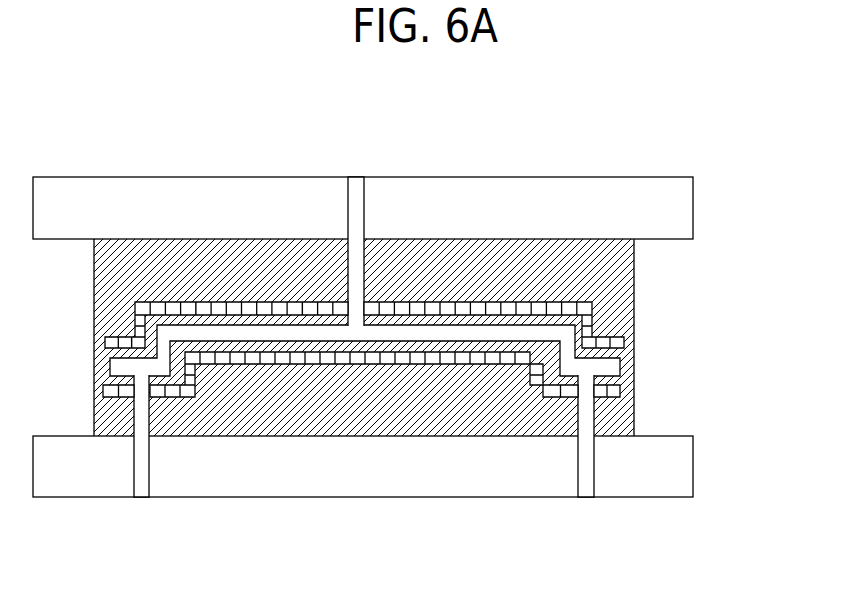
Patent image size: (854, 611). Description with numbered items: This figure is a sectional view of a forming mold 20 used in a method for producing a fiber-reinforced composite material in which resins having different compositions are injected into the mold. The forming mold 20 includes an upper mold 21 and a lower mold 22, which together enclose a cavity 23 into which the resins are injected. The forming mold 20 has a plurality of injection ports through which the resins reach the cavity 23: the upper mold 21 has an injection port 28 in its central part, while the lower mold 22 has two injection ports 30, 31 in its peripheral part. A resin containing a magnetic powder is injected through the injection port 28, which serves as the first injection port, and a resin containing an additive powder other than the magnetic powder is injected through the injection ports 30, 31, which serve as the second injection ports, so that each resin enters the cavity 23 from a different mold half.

The forming mold 20 is at (408, 336).
The upper mold 21 is at (635, 292).
The lower mold 22 is at (635, 392).
The cavity 23 is at (606, 366).
The injection port 28 is at (356, 177).
The injection port 30 is at (137, 500).
The injection port 31 is at (583, 498).